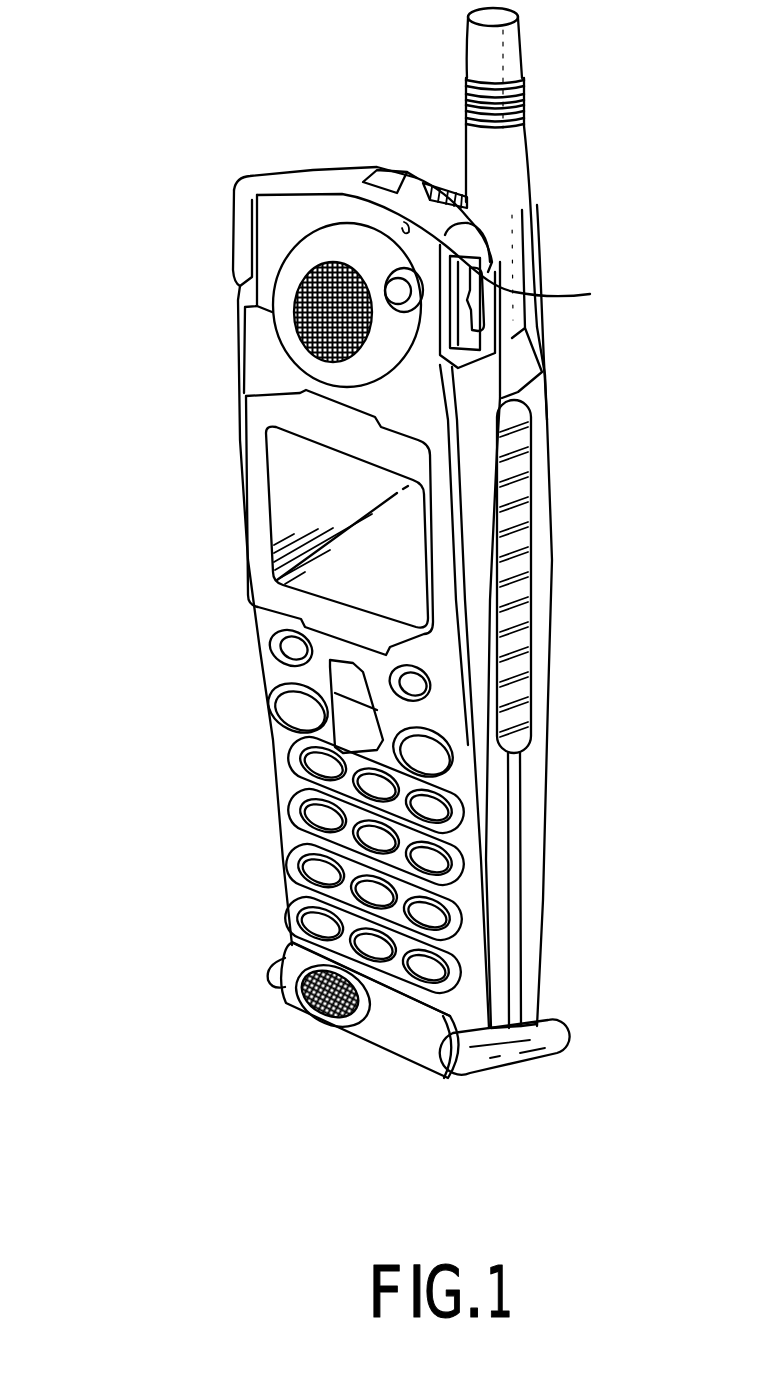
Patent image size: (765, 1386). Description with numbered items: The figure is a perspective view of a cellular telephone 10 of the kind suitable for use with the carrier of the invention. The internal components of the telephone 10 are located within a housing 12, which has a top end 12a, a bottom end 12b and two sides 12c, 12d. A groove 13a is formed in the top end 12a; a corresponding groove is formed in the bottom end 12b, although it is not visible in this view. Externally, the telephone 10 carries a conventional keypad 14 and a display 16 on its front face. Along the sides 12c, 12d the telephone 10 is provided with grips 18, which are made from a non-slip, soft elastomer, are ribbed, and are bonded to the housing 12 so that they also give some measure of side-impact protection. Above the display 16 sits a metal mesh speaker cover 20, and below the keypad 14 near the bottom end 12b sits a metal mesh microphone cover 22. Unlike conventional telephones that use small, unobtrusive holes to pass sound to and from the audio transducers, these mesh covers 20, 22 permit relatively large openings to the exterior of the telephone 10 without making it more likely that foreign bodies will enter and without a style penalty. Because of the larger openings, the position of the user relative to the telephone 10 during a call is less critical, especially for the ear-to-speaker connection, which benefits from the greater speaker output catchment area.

The cellular telephone 10 is at (200, 308).
The housing 12 is at (232, 651).
The top end 12a is at (417, 182).
The bottom end 12b is at (283, 993).
The side 12c is at (537, 783).
The side 12d is at (222, 438).
The groove 13a is at (515, 292).
The keypad 14 is at (312, 769).
The display 16 is at (295, 494).
The grips 18 is at (530, 555).
The speaker cover 20 is at (303, 330).
The microphone cover 22 is at (293, 980).